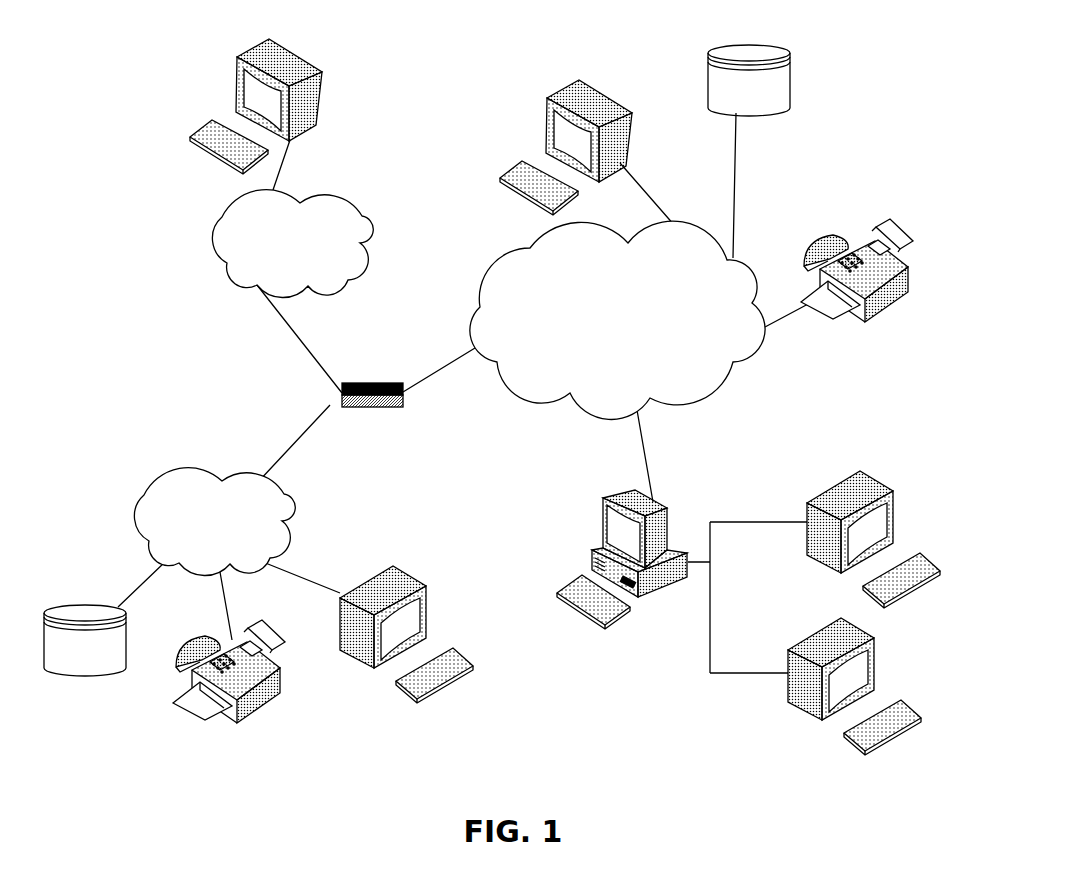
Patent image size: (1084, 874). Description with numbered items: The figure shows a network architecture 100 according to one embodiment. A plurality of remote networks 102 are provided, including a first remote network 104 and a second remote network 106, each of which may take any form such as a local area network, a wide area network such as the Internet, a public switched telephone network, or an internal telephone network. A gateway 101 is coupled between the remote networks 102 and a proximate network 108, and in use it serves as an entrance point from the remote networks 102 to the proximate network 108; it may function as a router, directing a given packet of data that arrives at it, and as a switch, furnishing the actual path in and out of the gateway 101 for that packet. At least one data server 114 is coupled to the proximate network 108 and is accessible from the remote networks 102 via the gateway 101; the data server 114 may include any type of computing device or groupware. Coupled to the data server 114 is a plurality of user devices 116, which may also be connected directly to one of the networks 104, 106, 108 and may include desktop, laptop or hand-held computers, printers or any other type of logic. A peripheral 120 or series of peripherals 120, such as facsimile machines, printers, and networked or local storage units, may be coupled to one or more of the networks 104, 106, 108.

The architecture 100 is at (146, 210).
The gateway 101 is at (355, 383).
The remote networks 102 is at (190, 305).
The first remote network 104 is at (145, 491).
The second remote network 106 is at (365, 212).
The proximate network 108 is at (723, 387).
The data server 114 is at (603, 515).
The user devices 116 is at (320, 80).
The peripheral 120 is at (85, 670).